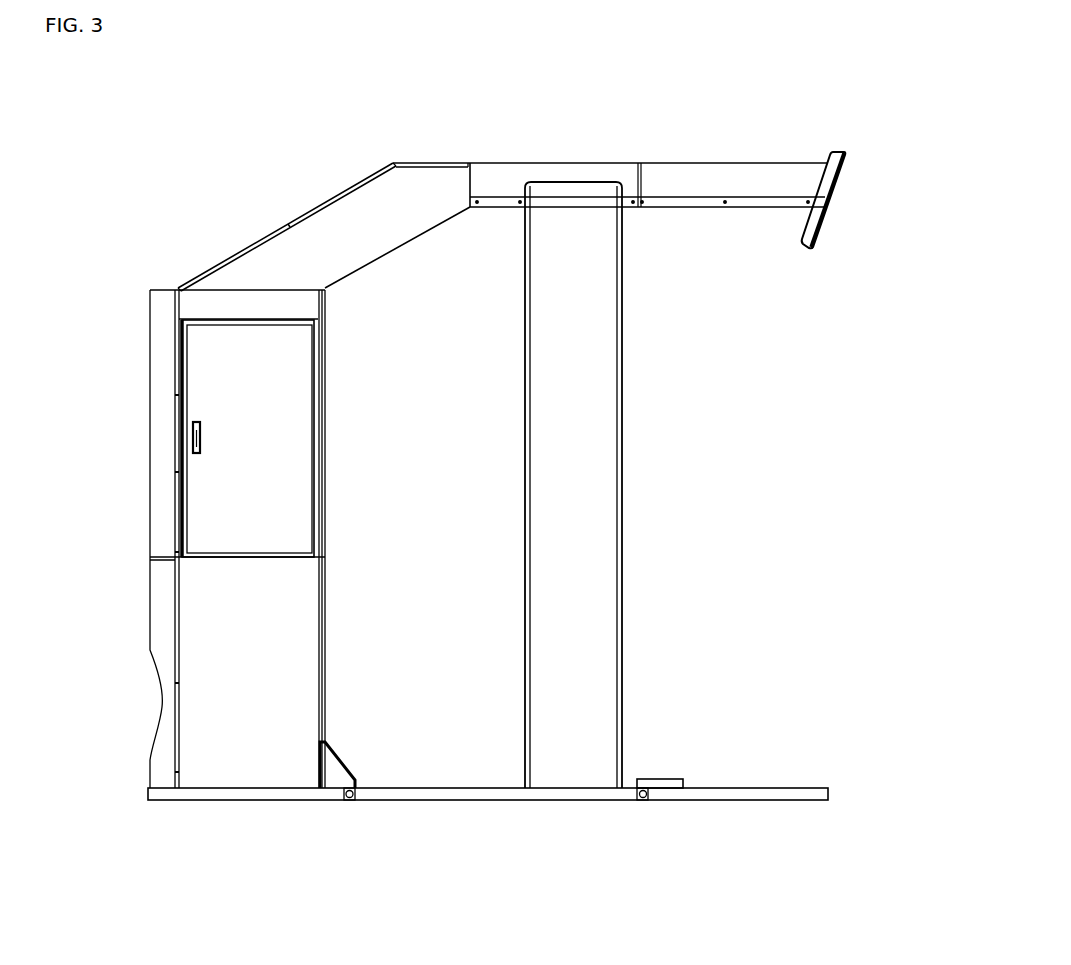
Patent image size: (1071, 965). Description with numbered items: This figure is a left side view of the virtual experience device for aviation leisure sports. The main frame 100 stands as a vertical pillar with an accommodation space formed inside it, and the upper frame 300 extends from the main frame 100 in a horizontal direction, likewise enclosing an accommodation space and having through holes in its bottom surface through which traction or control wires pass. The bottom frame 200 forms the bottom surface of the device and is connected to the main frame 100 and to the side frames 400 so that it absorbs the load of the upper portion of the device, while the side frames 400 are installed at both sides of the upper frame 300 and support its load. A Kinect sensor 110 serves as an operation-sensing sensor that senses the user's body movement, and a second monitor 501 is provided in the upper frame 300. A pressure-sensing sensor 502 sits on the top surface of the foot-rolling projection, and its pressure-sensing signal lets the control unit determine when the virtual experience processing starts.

The main frame 100 is at (210, 598).
The Kinect sensor 110 is at (337, 778).
The bottom frame 200 is at (772, 800).
The upper frame 300 is at (432, 160).
The side frame 400 is at (573, 488).
The second monitor 501 is at (835, 185).
The pressure-sensing sensor 502 is at (650, 776).